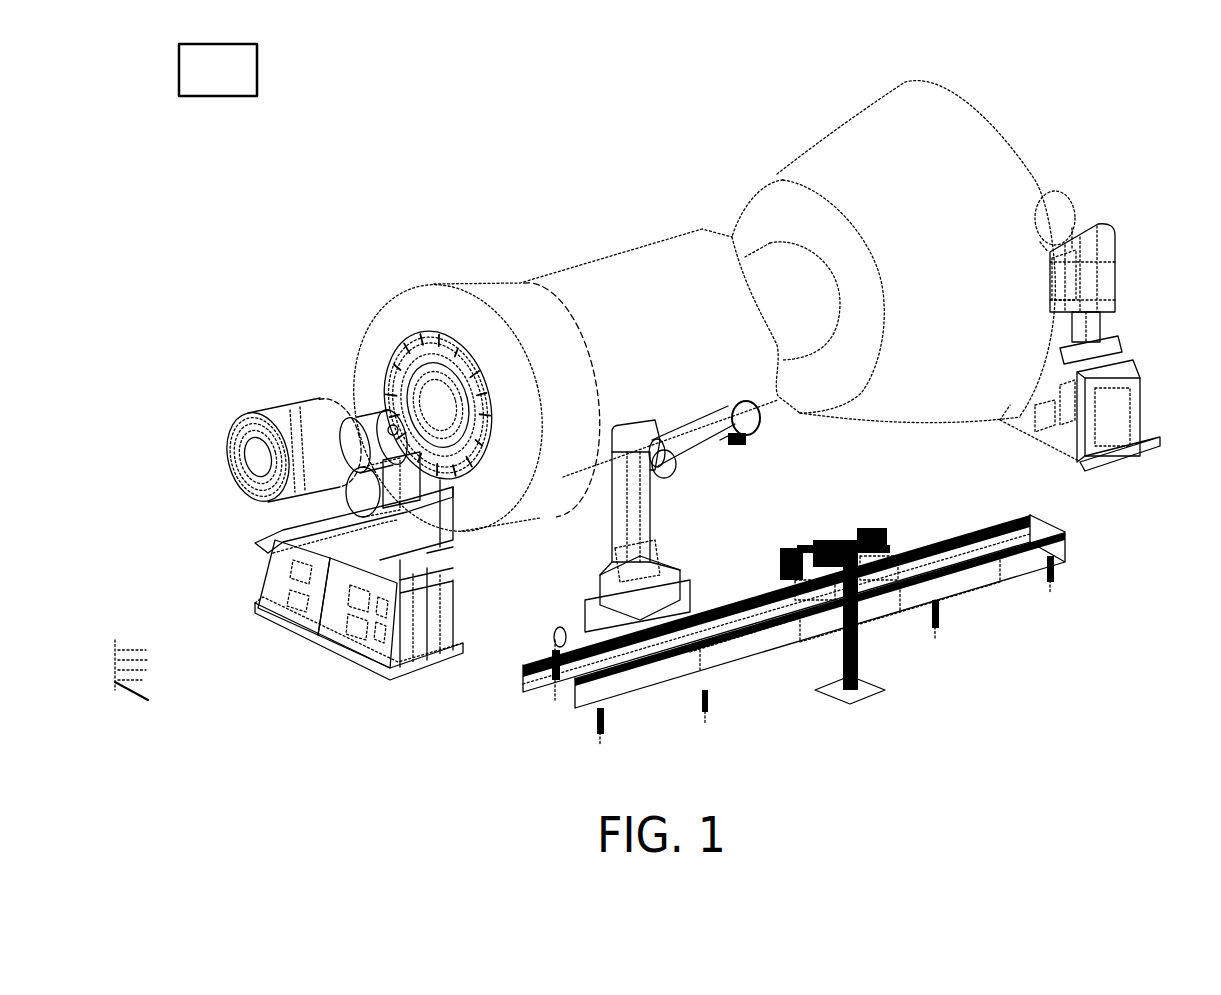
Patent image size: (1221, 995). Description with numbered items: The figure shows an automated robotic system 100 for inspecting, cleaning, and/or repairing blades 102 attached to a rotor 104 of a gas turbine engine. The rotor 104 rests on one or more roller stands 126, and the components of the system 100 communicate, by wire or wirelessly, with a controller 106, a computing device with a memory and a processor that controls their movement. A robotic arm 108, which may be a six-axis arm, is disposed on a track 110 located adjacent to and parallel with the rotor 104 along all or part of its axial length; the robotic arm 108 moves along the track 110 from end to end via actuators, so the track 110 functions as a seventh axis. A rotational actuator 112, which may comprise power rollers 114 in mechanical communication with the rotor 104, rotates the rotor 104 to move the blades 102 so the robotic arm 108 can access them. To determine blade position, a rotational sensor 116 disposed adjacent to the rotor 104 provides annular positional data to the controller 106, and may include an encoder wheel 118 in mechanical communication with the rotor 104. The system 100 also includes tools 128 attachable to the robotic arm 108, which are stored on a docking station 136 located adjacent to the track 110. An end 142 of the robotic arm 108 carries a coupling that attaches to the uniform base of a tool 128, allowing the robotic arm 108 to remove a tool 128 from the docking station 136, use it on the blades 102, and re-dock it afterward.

The automated robotic system 100 is at (1134, 628).
The blades 102 is at (472, 290).
The rotor 104 is at (1056, 192).
The controller 106 is at (232, 83).
The robotic arm 108 is at (634, 502).
The track 110 is at (1000, 573).
The rotational actuator 112 is at (1122, 278).
The power rollers 114 is at (1068, 266).
The rotational sensor 116 is at (464, 493).
The encoder wheel 118 is at (391, 425).
The roller stands 126 is at (402, 470).
The tools 128 is at (834, 515).
The docking station 136 is at (856, 668).
The end of the robotic arm 142 is at (736, 447).